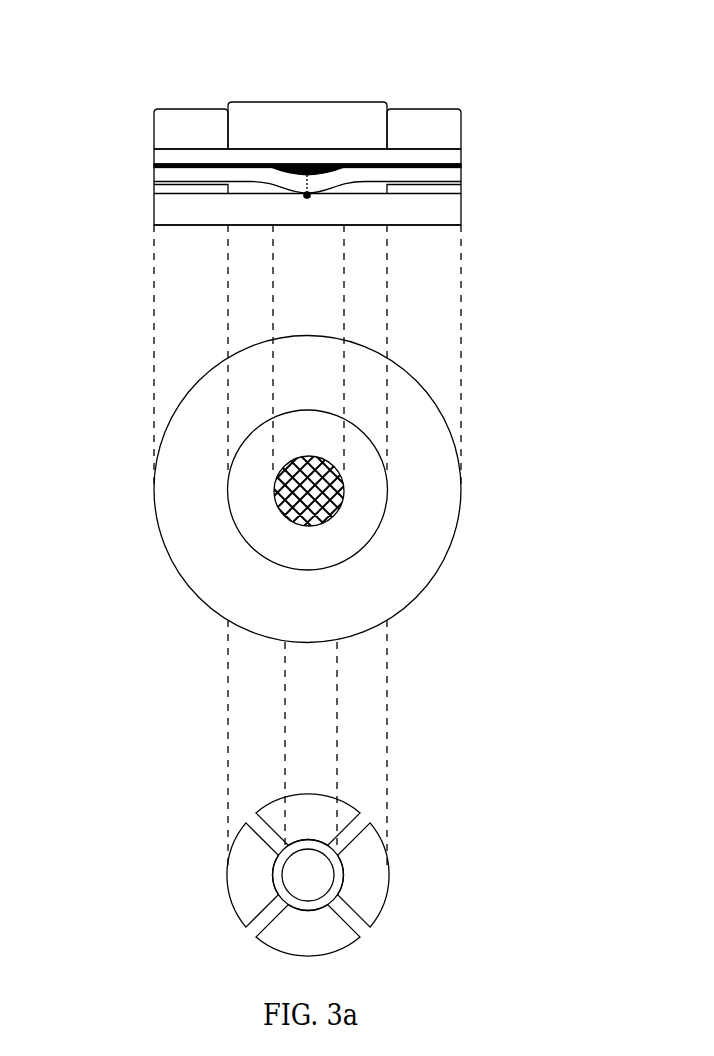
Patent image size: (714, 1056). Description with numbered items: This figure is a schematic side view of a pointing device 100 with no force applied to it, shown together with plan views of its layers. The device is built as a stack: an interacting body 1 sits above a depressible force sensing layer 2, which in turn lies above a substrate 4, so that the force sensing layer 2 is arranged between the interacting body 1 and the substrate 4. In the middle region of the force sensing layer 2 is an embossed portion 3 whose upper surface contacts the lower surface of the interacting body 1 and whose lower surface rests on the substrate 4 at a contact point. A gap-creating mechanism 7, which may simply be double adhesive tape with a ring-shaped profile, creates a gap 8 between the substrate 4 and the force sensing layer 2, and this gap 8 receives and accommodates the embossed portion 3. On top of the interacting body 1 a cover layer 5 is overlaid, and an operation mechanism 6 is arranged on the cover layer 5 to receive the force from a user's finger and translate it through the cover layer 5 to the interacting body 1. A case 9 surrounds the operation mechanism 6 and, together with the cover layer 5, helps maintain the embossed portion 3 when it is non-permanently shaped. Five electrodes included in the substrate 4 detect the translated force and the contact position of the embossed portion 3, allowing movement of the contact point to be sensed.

The pointing device 100 is at (157, 43).
The interacting body 1 is at (297, 165).
The depressible force sensing layer 2 is at (445, 175).
The embossed portion 3 is at (320, 184).
The substrate 4 is at (443, 218).
The cover layer 5 is at (443, 157).
The operation mechanism 6 is at (333, 117).
The gap-creating mechanism 7 is at (182, 187).
The gap 8 is at (248, 190).
The case 9 is at (440, 127).